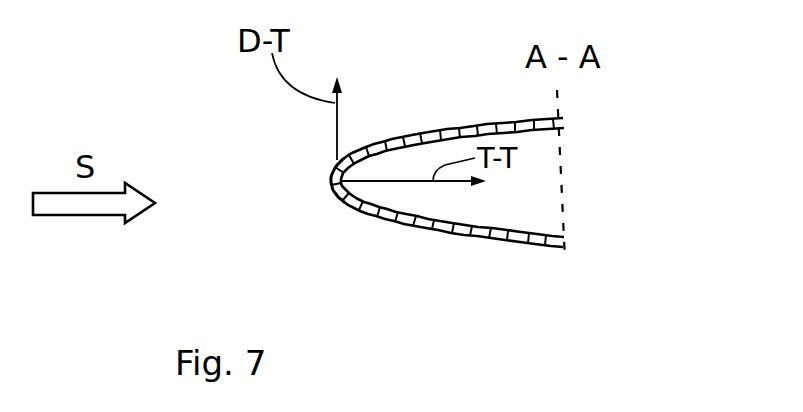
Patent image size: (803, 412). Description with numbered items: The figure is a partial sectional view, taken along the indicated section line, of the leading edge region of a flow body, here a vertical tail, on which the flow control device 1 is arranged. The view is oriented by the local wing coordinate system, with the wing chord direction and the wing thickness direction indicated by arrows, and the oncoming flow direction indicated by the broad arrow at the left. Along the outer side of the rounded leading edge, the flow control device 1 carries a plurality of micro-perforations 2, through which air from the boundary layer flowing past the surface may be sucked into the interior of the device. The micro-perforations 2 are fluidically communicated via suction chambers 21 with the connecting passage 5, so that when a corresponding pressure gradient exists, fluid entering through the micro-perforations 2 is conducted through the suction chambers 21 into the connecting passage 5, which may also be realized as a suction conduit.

The flow control device 1 is at (331, 178).
The micro-perforations 2 is at (366, 145).
The suction chambers 21 is at (422, 133).
The connecting passage 5 is at (410, 190).